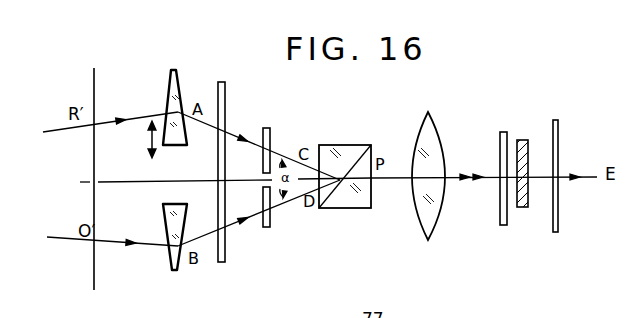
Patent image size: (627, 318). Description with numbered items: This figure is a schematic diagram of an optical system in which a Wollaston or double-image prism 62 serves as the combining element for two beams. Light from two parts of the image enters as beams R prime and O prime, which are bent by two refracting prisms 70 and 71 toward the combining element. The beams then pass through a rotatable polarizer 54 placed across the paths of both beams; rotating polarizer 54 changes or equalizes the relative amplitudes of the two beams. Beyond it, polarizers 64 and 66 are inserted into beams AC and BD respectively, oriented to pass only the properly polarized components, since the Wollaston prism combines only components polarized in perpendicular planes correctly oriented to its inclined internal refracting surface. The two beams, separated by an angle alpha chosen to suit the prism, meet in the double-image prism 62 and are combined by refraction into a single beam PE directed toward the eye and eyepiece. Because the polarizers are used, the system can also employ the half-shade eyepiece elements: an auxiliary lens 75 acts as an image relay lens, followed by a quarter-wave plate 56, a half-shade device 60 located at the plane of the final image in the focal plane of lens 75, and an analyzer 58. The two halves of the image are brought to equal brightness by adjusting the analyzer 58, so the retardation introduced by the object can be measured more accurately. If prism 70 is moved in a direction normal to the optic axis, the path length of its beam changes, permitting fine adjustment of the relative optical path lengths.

The refracting prism 70 is at (168, 99).
The refracting prism 71 is at (172, 262).
The rotatable polarizer 54 is at (226, 113).
The polarizer 64 is at (270, 136).
The polarizer 66 is at (269, 221).
The double-image prism 62 is at (350, 144).
The auxiliary lens 75 is at (433, 130).
The quarter-wave plate 56 is at (502, 210).
The half-shade device 60 is at (529, 200).
The analyzer 58 is at (559, 134).